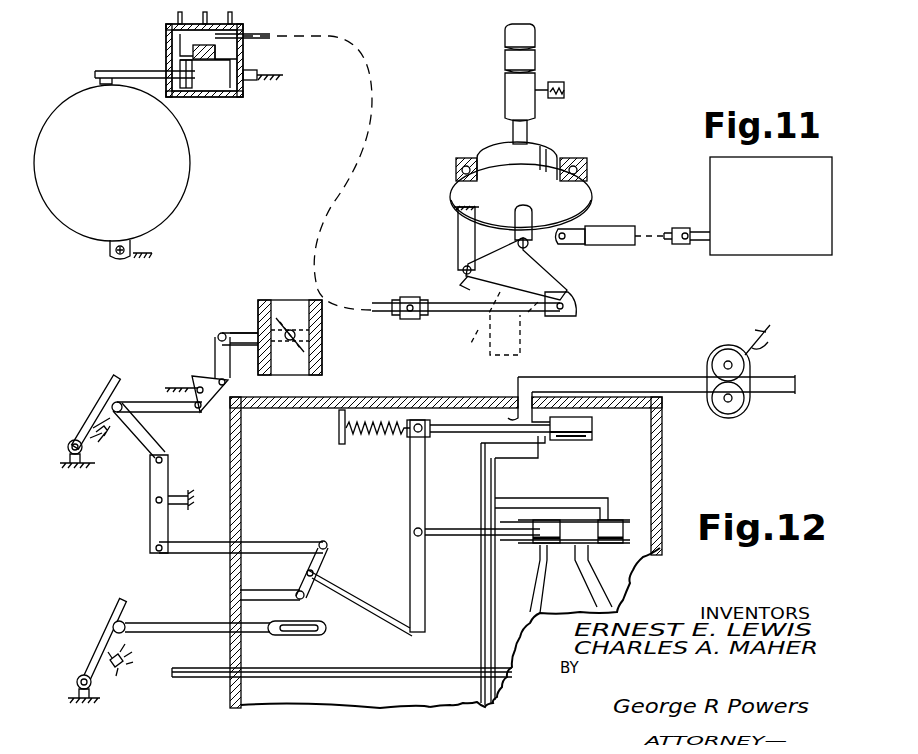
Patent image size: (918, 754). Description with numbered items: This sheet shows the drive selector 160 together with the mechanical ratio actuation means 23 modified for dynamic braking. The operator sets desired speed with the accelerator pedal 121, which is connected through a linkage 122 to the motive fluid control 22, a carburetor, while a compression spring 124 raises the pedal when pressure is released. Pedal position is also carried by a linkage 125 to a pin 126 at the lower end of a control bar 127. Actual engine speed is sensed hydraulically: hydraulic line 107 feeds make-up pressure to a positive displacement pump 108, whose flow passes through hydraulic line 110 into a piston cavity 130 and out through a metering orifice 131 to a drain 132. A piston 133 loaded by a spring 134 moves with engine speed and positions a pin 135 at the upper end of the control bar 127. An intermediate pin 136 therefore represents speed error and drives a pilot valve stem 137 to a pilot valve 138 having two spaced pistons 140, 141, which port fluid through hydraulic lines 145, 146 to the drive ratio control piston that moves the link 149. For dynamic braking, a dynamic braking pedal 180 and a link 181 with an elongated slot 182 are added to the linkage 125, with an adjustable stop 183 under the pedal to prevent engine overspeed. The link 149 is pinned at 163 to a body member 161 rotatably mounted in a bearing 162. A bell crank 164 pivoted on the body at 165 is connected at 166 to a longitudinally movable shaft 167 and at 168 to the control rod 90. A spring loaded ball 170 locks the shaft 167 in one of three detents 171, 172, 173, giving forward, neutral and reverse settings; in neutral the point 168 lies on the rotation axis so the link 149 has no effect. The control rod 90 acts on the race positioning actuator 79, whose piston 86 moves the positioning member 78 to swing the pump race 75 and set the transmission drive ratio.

In FIG. 11, the race positioning actuator 79 is at (162, 22).
In FIG. 11, the positioning member 78 is at (145, 70).
In FIG. 11, the piston 86 is at (205, 78).
In FIG. 11, the pump race 75 is at (190, 157).
In FIG. 11, the control rod 90 is at (330, 205).
In FIG. 11, the detent 173 is at (505, 42).
In FIG. 11, the detent 172 is at (505, 67).
In FIG. 11, the detent 171 is at (505, 92).
In FIG. 11, the spring loaded ball 170 is at (545, 90).
In FIG. 11, the drive selector 160 is at (518, 189).
In FIG. 11, the longitudinally movable shaft 167 is at (530, 138).
In FIG. 11, the bearing 162 is at (585, 176).
In FIG. 11, the body member 161 is at (580, 206).
In FIG. 11, the bell crank connection point 166 is at (509, 222).
In FIG. 11, the bell crank pivot 165 is at (462, 266).
In FIG. 11, the bell crank 164 is at (515, 282).
In FIG. 11, the pin connection 163 is at (572, 244).
In FIG. 11, the bell crank connection point 168 is at (568, 295).
In FIG. 11, the ratio actuation means 23 is at (710, 190).
In FIG. 12, the ratio actuation means 23 is at (230, 447).
In FIG. 11, the link 149 is at (676, 245).
In FIG. 12, the link 149 is at (215, 678).
In FIG. 11, the motive fluid control 22 is at (322, 355).
In FIG. 12, the linkage 122 is at (150, 367).
In FIG. 12, the accelerator pedal 121 is at (95, 407).
In FIG. 12, the compression spring 124 is at (100, 432).
In FIG. 12, the linkage 125 is at (203, 466).
In FIG. 12, the control bar 127 is at (410, 468).
In FIG. 12, the spring 134 is at (366, 440).
In FIG. 12, the pin 135 is at (419, 424).
In FIG. 12, the intermediate pin 136 is at (414, 534).
In FIG. 12, the pilot valve stem 137 is at (442, 530).
In FIG. 12, the piston cavity 130 is at (518, 408).
In FIG. 12, the hydraulic line 110 is at (595, 377).
In FIG. 12, the hydraulic line 107 is at (780, 378).
In FIG. 12, the positive displacement pump 108 is at (731, 412).
In FIG. 12, the piston 133 is at (586, 440).
In FIG. 12, the metering orifice 131 is at (553, 448).
In FIG. 12, the pilot valve 138 is at (598, 494).
In FIG. 12, the pilot valve piston 141 is at (545, 520).
In FIG. 12, the hydraulic line 145 is at (542, 559).
In FIG. 12, the pilot valve piston 140 is at (608, 545).
In FIG. 12, the hydraulic line 146 is at (600, 580).
In FIG. 12, the dynamic braking pedal 180 is at (112, 630).
In FIG. 12, the link 181 is at (173, 624).
In FIG. 12, the elongated slot 182 is at (308, 635).
In FIG. 12, the adjustable stop 183 is at (113, 676).
In FIG. 12, the pin 126 is at (412, 636).
In FIG. 12, the drain 132 is at (483, 704).